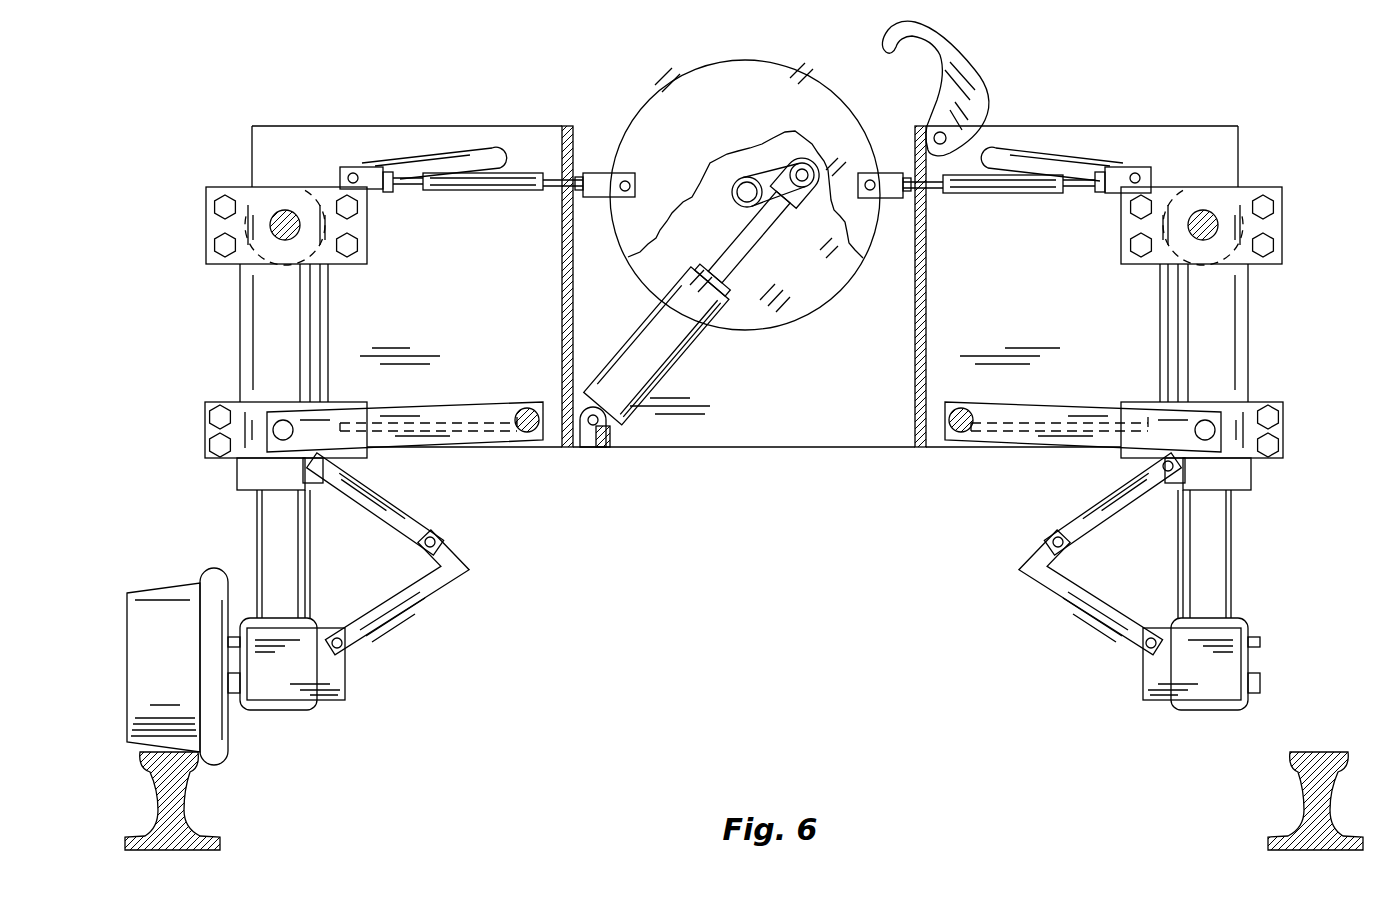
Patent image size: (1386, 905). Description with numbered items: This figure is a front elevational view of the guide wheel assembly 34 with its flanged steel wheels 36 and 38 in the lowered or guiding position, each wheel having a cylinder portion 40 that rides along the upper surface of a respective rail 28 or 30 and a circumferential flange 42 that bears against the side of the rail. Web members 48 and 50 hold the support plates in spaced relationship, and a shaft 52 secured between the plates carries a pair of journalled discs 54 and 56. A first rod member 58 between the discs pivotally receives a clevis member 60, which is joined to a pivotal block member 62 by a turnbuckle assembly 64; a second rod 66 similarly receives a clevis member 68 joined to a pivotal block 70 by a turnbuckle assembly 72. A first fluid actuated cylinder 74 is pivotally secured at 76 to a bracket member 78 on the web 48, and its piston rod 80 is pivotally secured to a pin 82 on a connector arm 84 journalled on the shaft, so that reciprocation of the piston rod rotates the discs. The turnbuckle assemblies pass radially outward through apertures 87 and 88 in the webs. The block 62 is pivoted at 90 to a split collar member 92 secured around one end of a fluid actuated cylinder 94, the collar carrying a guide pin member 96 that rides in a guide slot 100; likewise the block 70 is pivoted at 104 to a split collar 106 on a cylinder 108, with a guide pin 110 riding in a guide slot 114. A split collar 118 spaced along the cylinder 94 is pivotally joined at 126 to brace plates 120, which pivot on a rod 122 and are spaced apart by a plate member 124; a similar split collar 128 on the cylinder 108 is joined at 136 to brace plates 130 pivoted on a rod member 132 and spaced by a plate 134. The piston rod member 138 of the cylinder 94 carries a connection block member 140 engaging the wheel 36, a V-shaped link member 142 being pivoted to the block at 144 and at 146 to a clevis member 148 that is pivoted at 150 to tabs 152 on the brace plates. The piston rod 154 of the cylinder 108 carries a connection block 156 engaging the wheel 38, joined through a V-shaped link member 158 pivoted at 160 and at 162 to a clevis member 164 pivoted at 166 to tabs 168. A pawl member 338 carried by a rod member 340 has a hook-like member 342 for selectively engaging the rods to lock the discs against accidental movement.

The rail 28 is at (1305, 800).
The rail 30 is at (180, 795).
The guide wheel assembly 34 is at (1016, 116).
The flanged steel wheel 36 is at (1318, 692).
The flanged steel wheel 38 is at (152, 692).
The cylinder portion 40 is at (160, 610).
The circumferential flange 42 is at (215, 575).
The web member 48 is at (565, 320).
The web member 50 is at (925, 318).
The shaft 52 is at (735, 200).
The disc 54 is at (775, 76).
The disc 56 is at (818, 300).
The first rod member 58 is at (874, 182).
The clevis member 60 is at (882, 201).
The pivotal block member 62 is at (1125, 176).
The turnbuckle assembly 64 is at (1045, 180).
The second rod 66 is at (620, 182).
The clevis member 68 is at (606, 199).
The pivotal block 70 is at (376, 176).
The turnbuckle assembly 72 is at (520, 176).
The first fluid actuated cylinder 74 is at (665, 352).
The pivot connection 76 is at (590, 434).
The bracket member 78 is at (610, 444).
The piston rod 80 is at (752, 252).
The pin 82 is at (807, 170).
The connector arm 84 is at (762, 184).
The aperture 87 is at (926, 272).
The aperture 88 is at (565, 262).
The pivot connection 90 is at (1160, 182).
The split collar member 92 is at (1248, 192).
The fluid actuated cylinder 94 is at (1250, 320).
The guide pin member 96 is at (1220, 228).
The guide slot 100 is at (1082, 164).
The pivot connection 104 is at (355, 172).
The split collar 106 is at (240, 200).
The fluid actuated cylinder 108 is at (262, 308).
The guide pin 110 is at (283, 214).
The guide slot 114 is at (480, 158).
The split collar 118 is at (1286, 432).
The brace plate 120 is at (1012, 438).
The rod 122 is at (956, 434).
The plate member 124 is at (1040, 412).
The pivot connection 126 is at (1214, 425).
The split collar 128 is at (210, 456).
The brace plate 130 is at (463, 437).
The rod member 132 is at (526, 434).
The plate 134 is at (456, 410).
The pivot connection 136 is at (262, 470).
The piston rod member 138 is at (1212, 546).
The connection block member 140 is at (1178, 674).
The V-shaped link member 142 is at (1096, 614).
The pivot connection 144 is at (1140, 650).
The pivot connection 146 is at (1043, 543).
The clevis member 148 is at (1105, 504).
The pivot connection 150 is at (1185, 468).
The tab 152 is at (1172, 480).
The piston rod 154 is at (290, 573).
The connection block 156 is at (281, 688).
The V-shaped link member 158 is at (392, 608).
The pivot connection 160 is at (348, 650).
The pivot connection 162 is at (445, 543).
The clevis member 164 is at (380, 506).
The pivot connection 166 is at (282, 472).
The tab 168 is at (292, 427).
The pawl member 338 is at (965, 74).
The rod member 340 is at (946, 130).
The hook-like member 342 is at (907, 20).